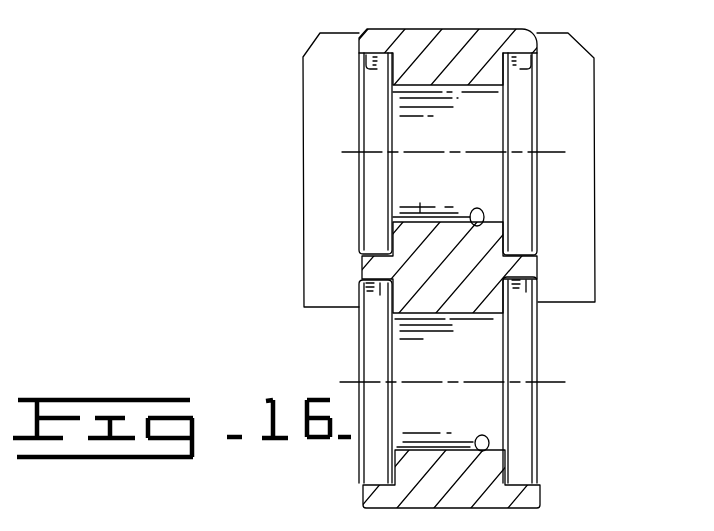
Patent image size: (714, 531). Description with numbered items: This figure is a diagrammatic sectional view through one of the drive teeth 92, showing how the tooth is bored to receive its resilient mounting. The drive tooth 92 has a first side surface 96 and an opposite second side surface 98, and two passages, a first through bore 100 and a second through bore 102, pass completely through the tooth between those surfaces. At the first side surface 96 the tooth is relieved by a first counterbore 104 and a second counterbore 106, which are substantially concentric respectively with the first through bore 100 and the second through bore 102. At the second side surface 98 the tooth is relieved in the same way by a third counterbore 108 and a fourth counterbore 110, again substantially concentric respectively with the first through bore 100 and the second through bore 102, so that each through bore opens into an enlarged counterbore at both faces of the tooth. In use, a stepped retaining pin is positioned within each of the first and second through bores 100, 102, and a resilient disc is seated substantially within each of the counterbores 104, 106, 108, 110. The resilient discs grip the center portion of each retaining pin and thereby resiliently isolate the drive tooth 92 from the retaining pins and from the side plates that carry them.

The drive tooth 92 is at (528, 30).
The first side surface 96 is at (535, 507).
The second side surface 98 is at (363, 492).
The first through bore 100 is at (476, 226).
The second through bore 102 is at (480, 452).
The first counterbore 104 is at (528, 65).
The second counterbore 106 is at (527, 288).
The third counterbore 108 is at (363, 68).
The fourth counterbore 110 is at (370, 291).